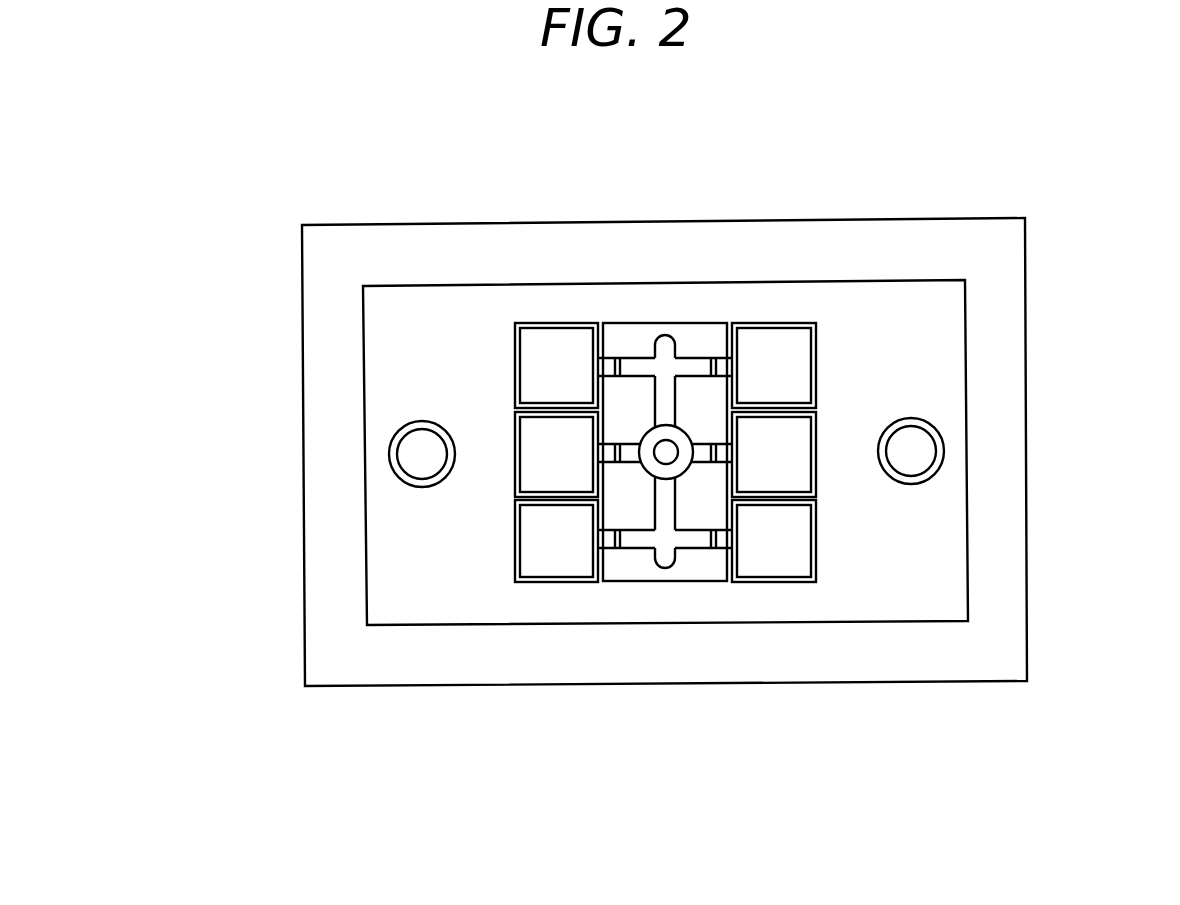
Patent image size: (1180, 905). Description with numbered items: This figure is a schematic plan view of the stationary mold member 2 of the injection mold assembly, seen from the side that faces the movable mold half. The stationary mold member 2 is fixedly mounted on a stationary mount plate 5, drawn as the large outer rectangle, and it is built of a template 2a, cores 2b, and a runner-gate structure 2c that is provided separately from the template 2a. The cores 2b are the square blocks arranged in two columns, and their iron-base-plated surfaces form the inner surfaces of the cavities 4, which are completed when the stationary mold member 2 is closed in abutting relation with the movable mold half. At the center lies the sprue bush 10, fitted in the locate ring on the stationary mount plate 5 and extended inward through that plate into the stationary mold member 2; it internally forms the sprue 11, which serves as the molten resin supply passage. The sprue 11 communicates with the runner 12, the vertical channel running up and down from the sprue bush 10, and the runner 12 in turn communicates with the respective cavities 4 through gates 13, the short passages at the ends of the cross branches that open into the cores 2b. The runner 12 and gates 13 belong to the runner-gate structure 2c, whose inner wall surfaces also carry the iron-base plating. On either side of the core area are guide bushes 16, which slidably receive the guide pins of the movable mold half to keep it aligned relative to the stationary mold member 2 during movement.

The stationary mold member 2 is at (440, 274).
The template 2a is at (935, 612).
The cores 2b is at (517, 333).
The runner-gate structure 2c is at (670, 330).
The cavities 4 is at (535, 344).
The stationary mount plate 5 is at (357, 673).
The sprue bush 10 is at (655, 470).
The sprue 11 is at (670, 459).
The runner 12 is at (666, 520).
The gates 13 is at (613, 450).
The guide bushes 16 is at (389, 463).